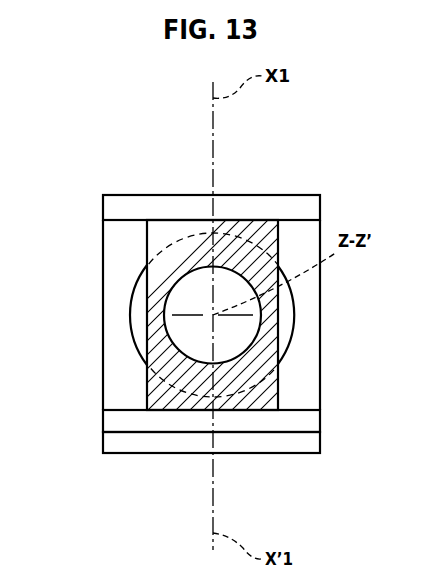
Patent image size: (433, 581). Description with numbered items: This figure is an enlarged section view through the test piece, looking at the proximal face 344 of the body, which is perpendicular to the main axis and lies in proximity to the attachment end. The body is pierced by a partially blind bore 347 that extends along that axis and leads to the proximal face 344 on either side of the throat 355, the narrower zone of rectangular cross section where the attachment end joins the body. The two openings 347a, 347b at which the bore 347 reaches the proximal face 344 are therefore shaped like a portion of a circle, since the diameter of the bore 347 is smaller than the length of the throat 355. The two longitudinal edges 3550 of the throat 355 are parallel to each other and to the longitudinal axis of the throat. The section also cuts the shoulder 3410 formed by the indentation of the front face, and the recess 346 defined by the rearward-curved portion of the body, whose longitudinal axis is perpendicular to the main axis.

The proximal face 344 is at (121, 236).
The shoulder 3410 is at (267, 195).
The longitudinal edges 3550 is at (147, 383).
The opening 347a is at (135, 316).
The opening 347b is at (287, 316).
The partially blind bore 347 is at (233, 330).
The throat 355 is at (173, 408).
The recess 346 is at (258, 421).